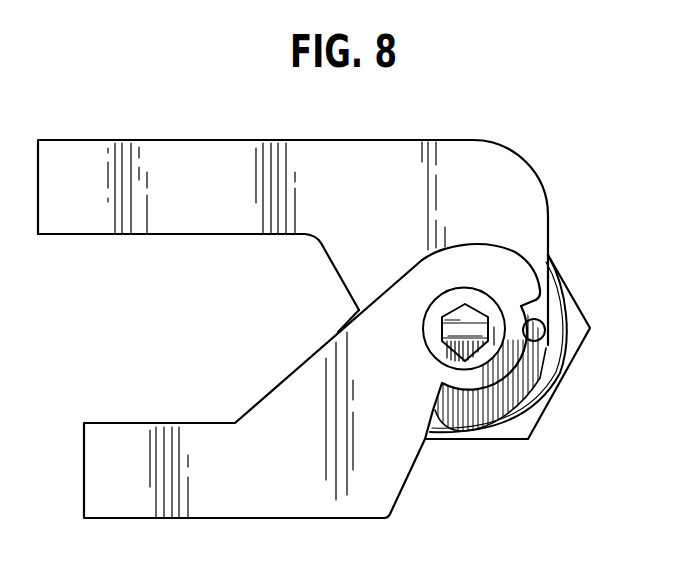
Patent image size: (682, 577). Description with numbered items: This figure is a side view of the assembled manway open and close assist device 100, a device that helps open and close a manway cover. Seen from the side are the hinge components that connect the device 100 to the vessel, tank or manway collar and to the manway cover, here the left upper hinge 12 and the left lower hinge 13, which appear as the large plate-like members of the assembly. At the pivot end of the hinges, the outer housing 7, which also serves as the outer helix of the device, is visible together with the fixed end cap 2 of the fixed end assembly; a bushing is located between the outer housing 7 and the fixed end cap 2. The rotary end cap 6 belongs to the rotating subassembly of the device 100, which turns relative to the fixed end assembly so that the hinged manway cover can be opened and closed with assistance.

The manway open and close assist device 100 is at (546, 112).
The left upper hinge 12 is at (82, 155).
The left lower hinge 13 is at (390, 468).
The fixed end cap 2 is at (582, 328).
The outer housing/outer helix 7 is at (562, 280).
The rotary end cap 6 is at (540, 383).